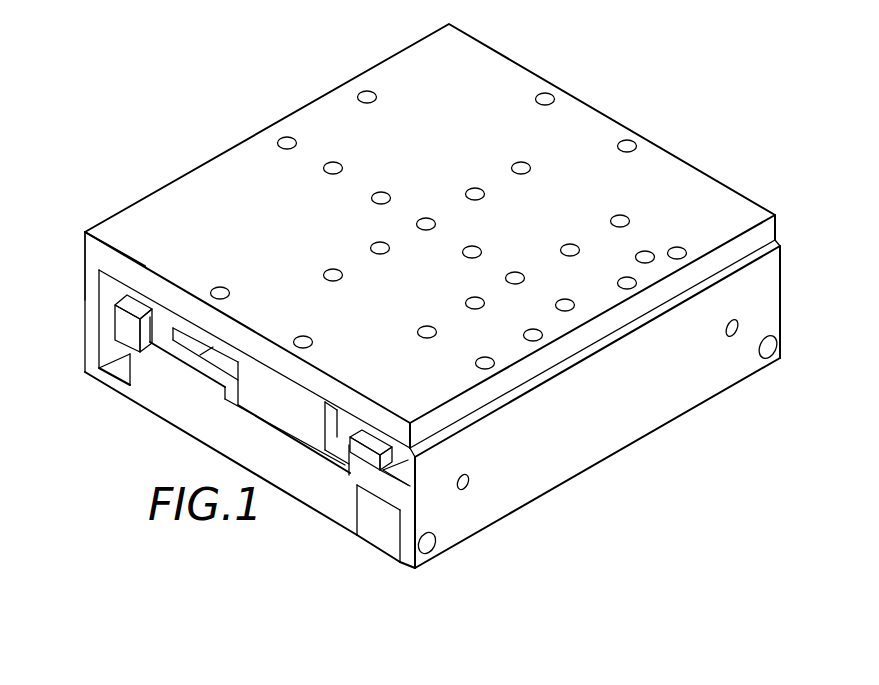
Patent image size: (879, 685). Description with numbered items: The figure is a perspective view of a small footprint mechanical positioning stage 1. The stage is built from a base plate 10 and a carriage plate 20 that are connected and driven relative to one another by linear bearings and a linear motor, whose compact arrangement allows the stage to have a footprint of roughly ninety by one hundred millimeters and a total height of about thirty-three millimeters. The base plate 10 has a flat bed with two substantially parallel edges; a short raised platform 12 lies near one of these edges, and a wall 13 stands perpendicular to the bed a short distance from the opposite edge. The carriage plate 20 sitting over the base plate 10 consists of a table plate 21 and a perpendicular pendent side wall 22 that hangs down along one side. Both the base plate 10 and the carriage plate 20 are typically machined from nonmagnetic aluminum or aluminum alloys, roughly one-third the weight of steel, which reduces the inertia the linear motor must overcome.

The positioning stage 1 is at (604, 92).
The base plate 10 is at (165, 395).
The short raised platform 12 is at (388, 488).
The wall 13 is at (138, 327).
The carriage plate 20 is at (203, 168).
The table plate 21 is at (121, 265).
The pendent side wall 22 is at (82, 290).